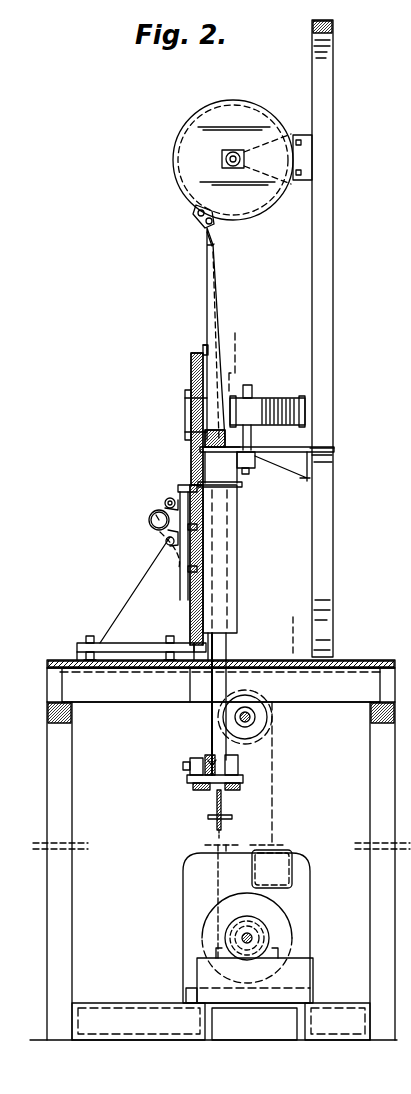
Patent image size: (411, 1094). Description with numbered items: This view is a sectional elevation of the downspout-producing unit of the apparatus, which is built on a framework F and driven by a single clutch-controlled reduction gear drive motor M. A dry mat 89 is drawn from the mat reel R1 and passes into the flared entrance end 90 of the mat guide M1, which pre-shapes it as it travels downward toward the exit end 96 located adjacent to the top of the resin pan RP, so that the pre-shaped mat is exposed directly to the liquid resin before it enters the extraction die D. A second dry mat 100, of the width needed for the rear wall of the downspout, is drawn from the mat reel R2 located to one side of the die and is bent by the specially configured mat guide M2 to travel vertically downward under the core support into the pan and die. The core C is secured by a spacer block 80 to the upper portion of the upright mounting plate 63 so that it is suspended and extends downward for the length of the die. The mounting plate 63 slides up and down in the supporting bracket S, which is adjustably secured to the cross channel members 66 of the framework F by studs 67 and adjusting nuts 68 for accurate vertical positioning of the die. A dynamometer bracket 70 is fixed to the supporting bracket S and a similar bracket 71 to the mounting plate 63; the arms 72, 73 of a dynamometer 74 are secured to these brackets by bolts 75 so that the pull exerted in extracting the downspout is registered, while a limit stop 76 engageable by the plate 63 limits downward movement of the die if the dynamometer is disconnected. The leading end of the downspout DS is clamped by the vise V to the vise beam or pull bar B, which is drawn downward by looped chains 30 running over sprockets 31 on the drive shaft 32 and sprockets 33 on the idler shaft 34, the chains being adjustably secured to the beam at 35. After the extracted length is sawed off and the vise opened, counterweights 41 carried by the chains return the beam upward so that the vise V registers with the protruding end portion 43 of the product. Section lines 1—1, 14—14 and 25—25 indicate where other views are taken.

The section line 1— 1 is at (295, 75).
The mat reel R1 is at (212, 110).
The dry mat 89 is at (204, 233).
The flared entrance end 90 is at (208, 248).
The mat guide M1 is at (208, 299).
The section line 14— 14 is at (224, 240).
The core C is at (234, 340).
The mounting plate 63 is at (190, 362).
The spacer block 80 is at (202, 352).
The dry mat 100 is at (185, 398).
The mat guide M2 is at (205, 437).
The exit end 96 is at (204, 446).
The mat reel R2 is at (287, 398).
The resin pan RP is at (258, 464).
The section line 25— 25 is at (158, 483).
The dynamometer bracket 70 is at (180, 487).
The extraction die D is at (239, 580).
The dynamometer 74 is at (150, 516).
The bolts 75 is at (167, 501).
The dynamometer arm 72 is at (164, 509).
The dynamometer arm 73 is at (168, 534).
The bracket 71 is at (160, 562).
The supporting bracket S is at (142, 584).
The adjusting nuts 68 is at (152, 647).
The studs 67 is at (90, 636).
The limit stop 76 is at (206, 650).
The framework F is at (45, 719).
The cross channel members 66 is at (210, 683).
The downspout DS is at (210, 723).
The sprockets 33 is at (256, 732).
The idler shaft 34 is at (253, 719).
The vise V is at (190, 760).
The protruding end portions 43 is at (210, 758).
The vise beam B is at (216, 801).
The chain attachment 35 is at (214, 821).
The looped chains 30 is at (274, 797).
The drive motor M is at (313, 909).
The counterweights 41 is at (290, 874).
The sprockets 31 is at (236, 915).
The drive shaft 32 is at (242, 940).